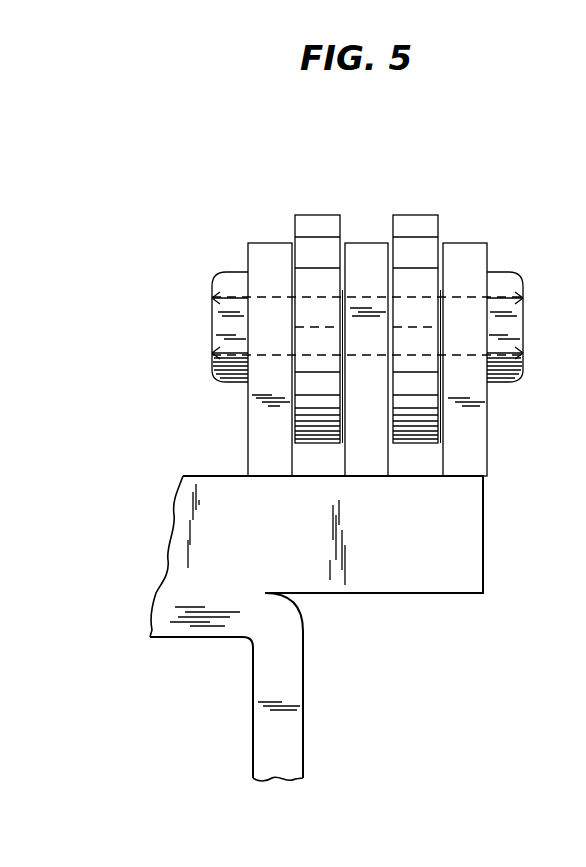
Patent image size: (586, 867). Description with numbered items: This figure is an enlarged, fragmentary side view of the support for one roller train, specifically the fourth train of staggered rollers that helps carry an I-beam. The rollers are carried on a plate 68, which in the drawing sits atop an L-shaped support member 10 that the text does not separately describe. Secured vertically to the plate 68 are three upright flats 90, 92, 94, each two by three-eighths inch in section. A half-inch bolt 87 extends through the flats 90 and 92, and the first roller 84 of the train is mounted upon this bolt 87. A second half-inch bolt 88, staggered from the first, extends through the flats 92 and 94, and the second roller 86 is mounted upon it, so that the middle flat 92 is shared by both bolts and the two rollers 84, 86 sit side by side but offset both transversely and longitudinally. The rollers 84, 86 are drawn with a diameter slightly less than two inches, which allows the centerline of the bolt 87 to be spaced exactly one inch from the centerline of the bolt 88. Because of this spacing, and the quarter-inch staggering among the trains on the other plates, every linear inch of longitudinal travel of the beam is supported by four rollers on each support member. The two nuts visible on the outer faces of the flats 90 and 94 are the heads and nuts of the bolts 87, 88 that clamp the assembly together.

The mounting bracket leg 10 is at (303, 752).
The plate 68 is at (476, 548).
The first roller 84 is at (312, 222).
The second roller 86 is at (417, 222).
The bolt 87 is at (212, 328).
The bolt 88 is at (521, 330).
The flat 90 is at (272, 250).
The flat 92 is at (366, 250).
The flat 94 is at (474, 250).